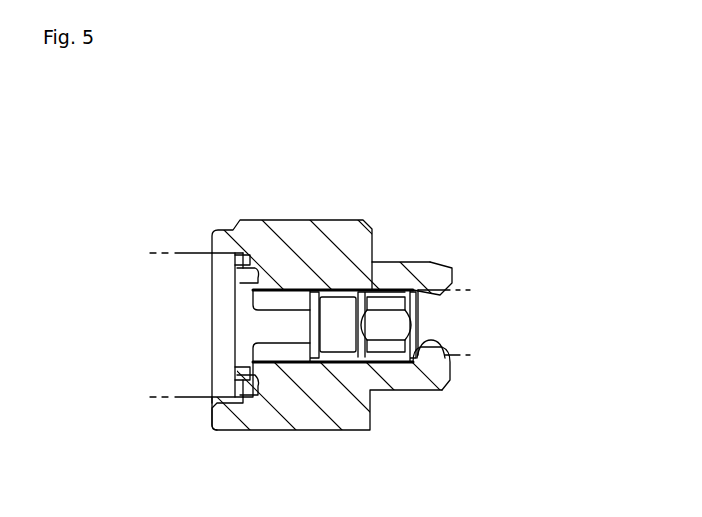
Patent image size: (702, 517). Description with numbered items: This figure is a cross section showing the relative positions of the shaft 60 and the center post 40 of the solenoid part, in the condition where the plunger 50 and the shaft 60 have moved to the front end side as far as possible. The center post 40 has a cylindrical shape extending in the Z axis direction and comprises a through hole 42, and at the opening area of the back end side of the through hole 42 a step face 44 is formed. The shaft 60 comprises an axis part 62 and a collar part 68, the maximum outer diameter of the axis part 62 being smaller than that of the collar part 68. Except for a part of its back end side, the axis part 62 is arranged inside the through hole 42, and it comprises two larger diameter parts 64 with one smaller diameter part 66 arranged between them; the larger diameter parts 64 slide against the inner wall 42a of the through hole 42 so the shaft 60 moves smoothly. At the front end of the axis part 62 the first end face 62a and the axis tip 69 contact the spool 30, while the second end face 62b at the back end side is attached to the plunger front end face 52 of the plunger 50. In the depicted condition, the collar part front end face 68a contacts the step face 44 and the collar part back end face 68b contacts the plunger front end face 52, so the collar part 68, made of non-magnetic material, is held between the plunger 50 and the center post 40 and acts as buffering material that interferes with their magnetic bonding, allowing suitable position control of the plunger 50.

The spool 30 is at (445, 320).
The center post 40 is at (354, 238).
The through hole 42 is at (433, 292).
The inner wall 42a is at (365, 290).
The step face 44 is at (262, 283).
The plunger 50 is at (190, 305).
The plunger front end face 52 is at (215, 231).
The shaft 60 is at (321, 272).
The axis part 62 is at (383, 318).
The first end face 62a is at (448, 380).
The second end face 62b is at (237, 333).
The larger diameter part 64 is at (286, 335).
The smaller diameter part 66 is at (337, 337).
The collar part 68 is at (233, 422).
The collar part front end face 68a is at (257, 390).
The collar part back end face 68b is at (222, 405).
The axis tip 69 is at (412, 370).